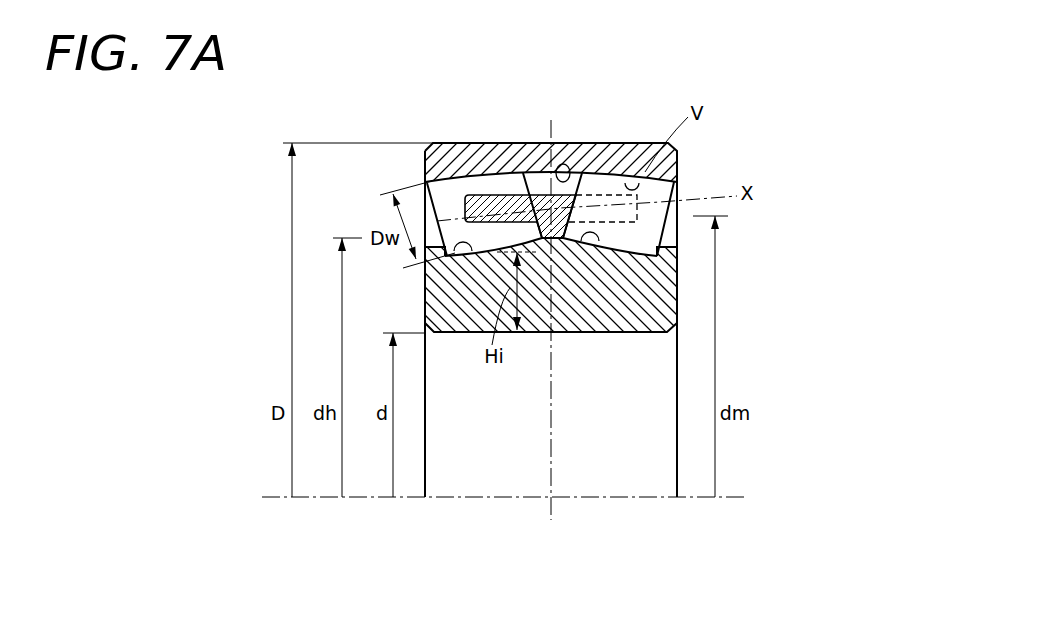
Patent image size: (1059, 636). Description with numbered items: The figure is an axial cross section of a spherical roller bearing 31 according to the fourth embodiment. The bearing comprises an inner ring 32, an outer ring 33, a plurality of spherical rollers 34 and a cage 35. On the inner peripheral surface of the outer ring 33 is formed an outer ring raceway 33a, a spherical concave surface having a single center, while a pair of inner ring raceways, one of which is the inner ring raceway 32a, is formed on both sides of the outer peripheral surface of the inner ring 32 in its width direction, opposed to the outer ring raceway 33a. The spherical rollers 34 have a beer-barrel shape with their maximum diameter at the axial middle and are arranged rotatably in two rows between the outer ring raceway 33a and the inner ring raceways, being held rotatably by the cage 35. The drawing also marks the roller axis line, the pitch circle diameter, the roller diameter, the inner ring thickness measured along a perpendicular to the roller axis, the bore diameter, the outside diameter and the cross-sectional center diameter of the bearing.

The spherical roller bearing 31 is at (718, 92).
The inner ring 32 is at (635, 318).
The inner ring raceway 32a is at (472, 252).
The outer ring 33 is at (630, 177).
The outer ring raceway 33a is at (567, 166).
The spherical roller 34 is at (452, 193).
The cage 35 is at (478, 212).